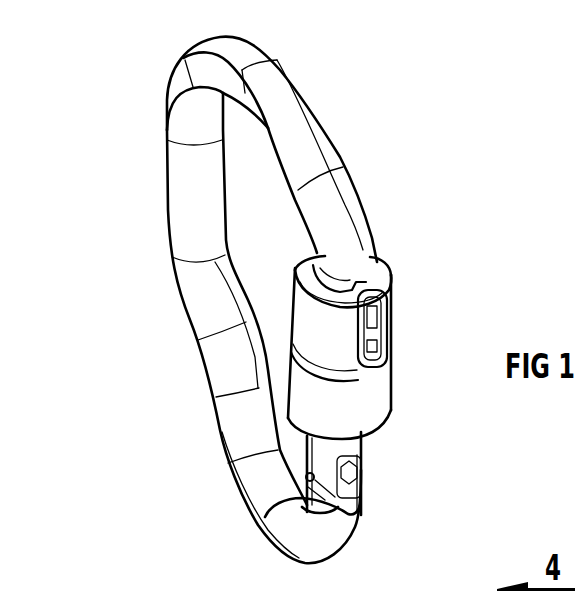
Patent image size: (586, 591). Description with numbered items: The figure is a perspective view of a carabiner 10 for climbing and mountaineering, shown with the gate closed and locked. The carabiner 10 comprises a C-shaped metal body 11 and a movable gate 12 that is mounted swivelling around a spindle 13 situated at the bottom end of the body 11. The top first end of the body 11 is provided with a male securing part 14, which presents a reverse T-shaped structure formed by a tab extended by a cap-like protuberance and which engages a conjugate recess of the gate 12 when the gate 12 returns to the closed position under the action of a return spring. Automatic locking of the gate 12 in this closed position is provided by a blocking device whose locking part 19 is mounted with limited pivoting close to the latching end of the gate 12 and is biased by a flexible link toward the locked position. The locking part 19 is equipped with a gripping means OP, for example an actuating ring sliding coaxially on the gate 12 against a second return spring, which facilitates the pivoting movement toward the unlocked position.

The carabiner 10 is at (143, 384).
The body 11 is at (312, 143).
The gate 12 is at (350, 445).
The spindle 13 is at (315, 483).
The male securing part 14 is at (385, 288).
The locking part 19 is at (373, 335).
The gripping means OP is at (317, 333).